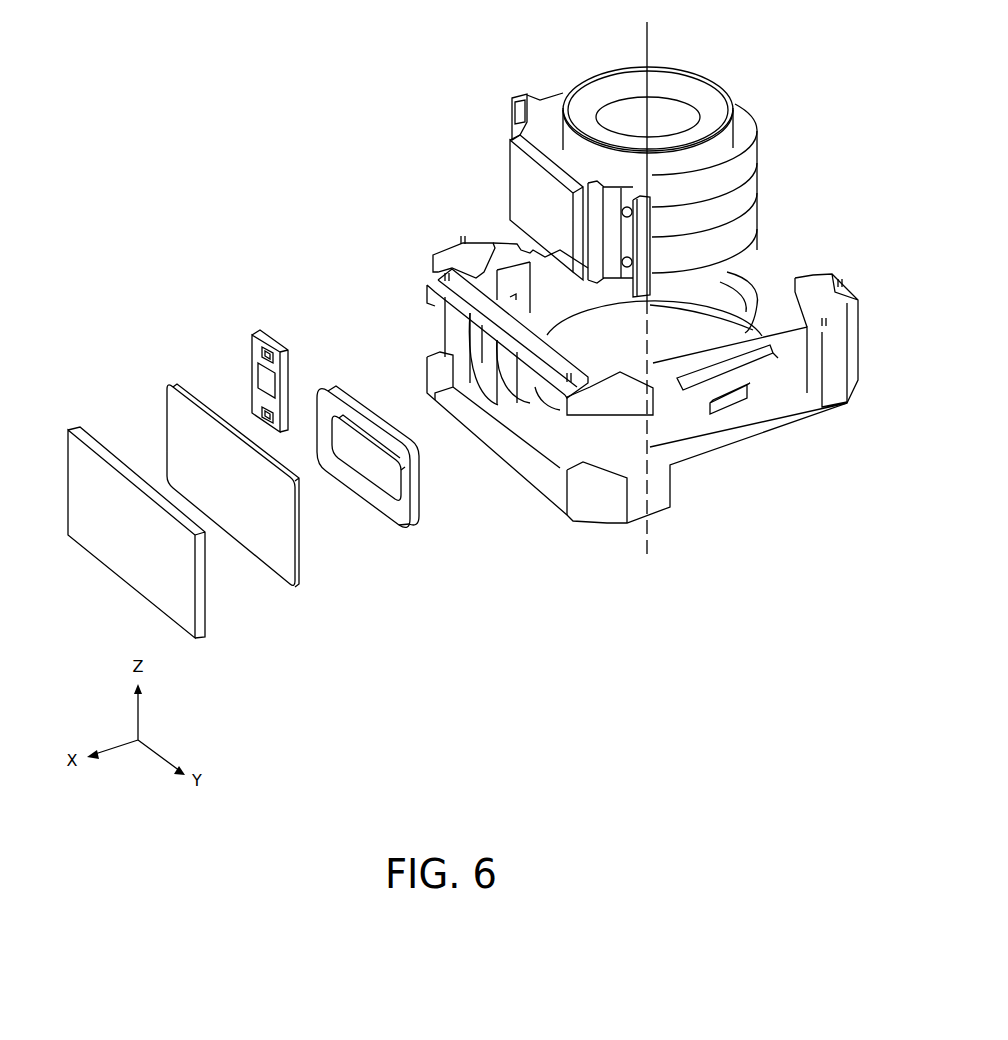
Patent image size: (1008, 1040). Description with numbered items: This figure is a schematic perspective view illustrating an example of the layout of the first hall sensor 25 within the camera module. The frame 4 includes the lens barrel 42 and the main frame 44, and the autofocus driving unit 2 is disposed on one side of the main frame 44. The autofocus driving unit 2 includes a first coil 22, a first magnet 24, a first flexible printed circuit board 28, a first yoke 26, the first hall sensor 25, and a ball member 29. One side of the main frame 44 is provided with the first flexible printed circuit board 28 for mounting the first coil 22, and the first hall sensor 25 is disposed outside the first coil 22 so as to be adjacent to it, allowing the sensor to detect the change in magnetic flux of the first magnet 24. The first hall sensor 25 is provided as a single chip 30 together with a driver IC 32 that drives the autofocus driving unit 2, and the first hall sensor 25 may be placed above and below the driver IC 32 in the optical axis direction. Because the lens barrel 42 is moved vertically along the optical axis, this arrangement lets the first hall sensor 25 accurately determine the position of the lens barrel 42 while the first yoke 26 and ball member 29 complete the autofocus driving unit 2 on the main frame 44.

The autofocus driving unit 2 is at (192, 239).
The frame 4 is at (812, 216).
The first coil 22 is at (362, 421).
The first magnet 24 is at (518, 160).
The first hall sensor 25 is at (267, 350).
The first yoke 26 is at (123, 530).
The first flexible printed circuit board 28 is at (177, 437).
The ball member 29 is at (622, 212).
The single chip 30 is at (252, 367).
The driver IC 32 is at (267, 385).
The lens barrel 42 is at (743, 140).
The main frame 44 is at (777, 387).